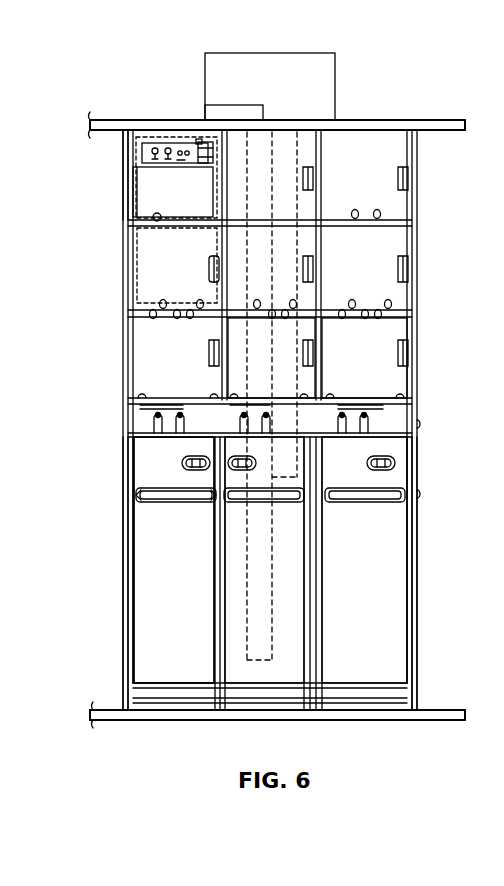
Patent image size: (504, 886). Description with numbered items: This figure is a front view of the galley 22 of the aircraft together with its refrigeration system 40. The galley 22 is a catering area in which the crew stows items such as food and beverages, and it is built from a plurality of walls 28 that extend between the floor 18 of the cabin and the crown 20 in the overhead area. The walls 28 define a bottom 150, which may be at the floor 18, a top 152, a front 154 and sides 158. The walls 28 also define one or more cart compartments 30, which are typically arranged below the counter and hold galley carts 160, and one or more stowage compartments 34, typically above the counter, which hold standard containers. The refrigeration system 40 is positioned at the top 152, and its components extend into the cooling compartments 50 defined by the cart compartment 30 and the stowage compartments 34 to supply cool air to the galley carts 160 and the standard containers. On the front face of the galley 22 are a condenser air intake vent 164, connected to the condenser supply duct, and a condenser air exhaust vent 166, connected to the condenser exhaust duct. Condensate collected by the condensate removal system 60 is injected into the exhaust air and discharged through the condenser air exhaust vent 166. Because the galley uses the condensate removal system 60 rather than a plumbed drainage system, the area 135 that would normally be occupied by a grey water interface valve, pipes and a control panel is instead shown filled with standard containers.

The floor 18 is at (115, 710).
The crown 20 is at (112, 130).
The galley 22 is at (103, 350).
The walls 28 is at (415, 400).
The cart compartments 30 is at (152, 617).
The stowage compartments 34 is at (385, 335).
The refrigeration system 40 is at (296, 46).
The cooling compartments 50 is at (237, 375).
The condensate removal system 60 is at (217, 103).
The area 135 is at (128, 263).
The bottom 150 is at (195, 712).
The top 152 is at (384, 127).
The front 154 is at (373, 560).
The sides 158 is at (415, 482).
The galley carts 160 is at (123, 475).
The condenser air intake vent 164 is at (198, 143).
The condenser air exhaust vent 166 is at (200, 157).